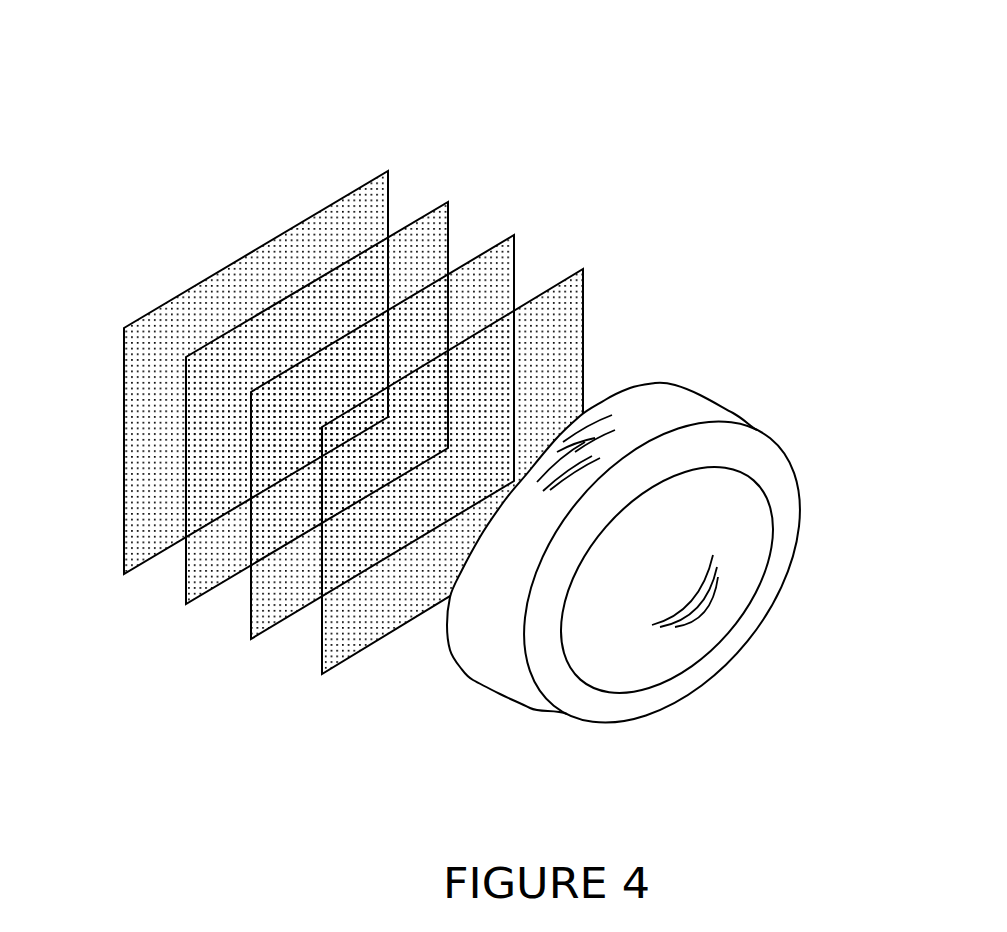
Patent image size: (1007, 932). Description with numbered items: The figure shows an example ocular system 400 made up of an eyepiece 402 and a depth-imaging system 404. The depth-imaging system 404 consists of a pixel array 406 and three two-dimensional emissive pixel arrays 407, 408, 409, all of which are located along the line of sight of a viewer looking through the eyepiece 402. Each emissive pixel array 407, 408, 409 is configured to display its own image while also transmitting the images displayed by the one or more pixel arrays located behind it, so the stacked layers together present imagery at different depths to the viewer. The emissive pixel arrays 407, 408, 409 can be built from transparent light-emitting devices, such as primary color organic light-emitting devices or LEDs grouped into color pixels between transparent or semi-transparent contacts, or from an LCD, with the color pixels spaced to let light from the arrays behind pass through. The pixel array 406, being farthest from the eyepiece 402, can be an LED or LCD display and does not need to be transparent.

The ocular system 400 is at (756, 76).
The eyepiece 402 is at (508, 673).
The depth-imaging system 404 is at (578, 234).
The pixel array 406 is at (152, 557).
The two-dimensional emissive pixel array 407 is at (205, 593).
The two-dimensional emissive pixel array 408 is at (277, 623).
The two-dimensional emissive pixel array 409 is at (352, 656).